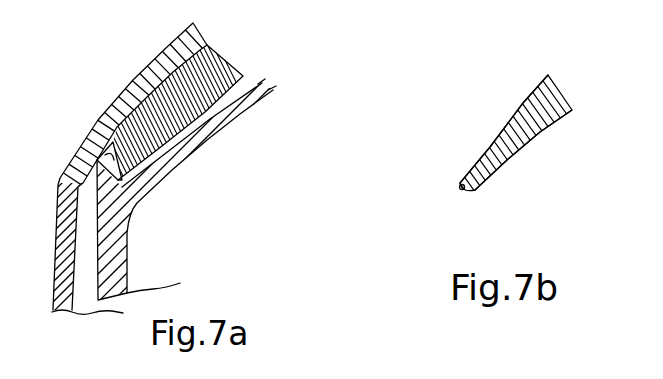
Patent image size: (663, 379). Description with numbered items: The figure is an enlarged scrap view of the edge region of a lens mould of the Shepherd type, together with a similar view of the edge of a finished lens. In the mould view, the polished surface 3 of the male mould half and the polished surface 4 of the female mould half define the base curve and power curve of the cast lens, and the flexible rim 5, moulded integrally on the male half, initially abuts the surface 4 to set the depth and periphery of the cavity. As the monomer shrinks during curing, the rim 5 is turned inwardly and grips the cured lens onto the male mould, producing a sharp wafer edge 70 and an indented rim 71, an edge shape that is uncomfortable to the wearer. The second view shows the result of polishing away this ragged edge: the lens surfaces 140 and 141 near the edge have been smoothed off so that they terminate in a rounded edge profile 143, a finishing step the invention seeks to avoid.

In FIG. 7a, the surface 3 is at (182, 125).
In FIG. 7a, the surface 4 is at (155, 80).
In FIG. 7a, the flexible rim 5 is at (100, 157).
In FIG. 7a, the sharp wafer edge 70 is at (113, 147).
In FIG. 7a, the indented rim 71 is at (143, 170).
In FIG. 7b, the lens surface 140 is at (480, 192).
In FIG. 7b, the lens surface 141 is at (458, 174).
In FIG. 7b, the rounded edge profile 143 is at (460, 190).